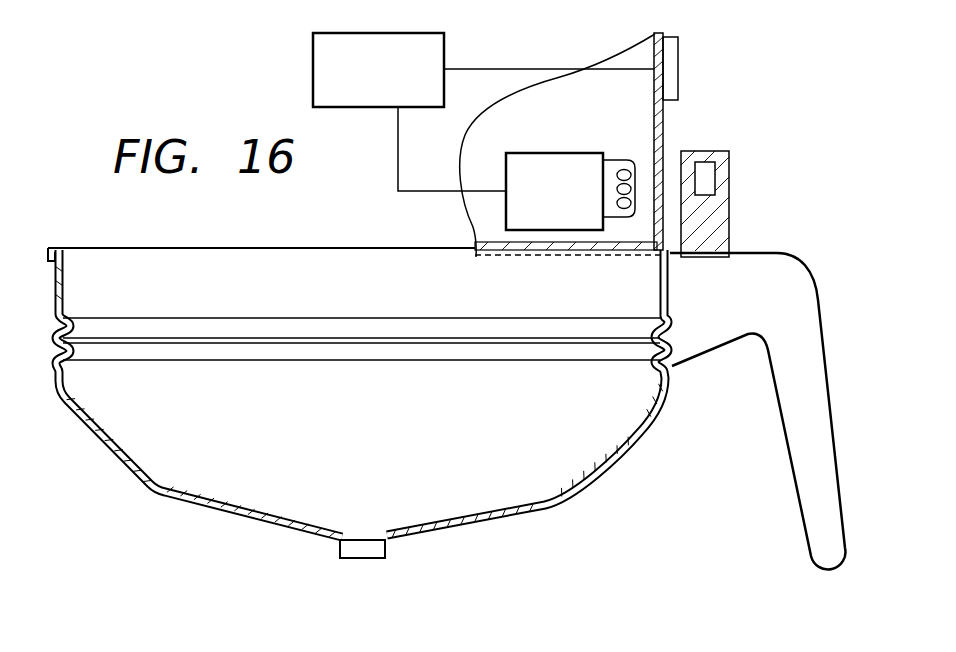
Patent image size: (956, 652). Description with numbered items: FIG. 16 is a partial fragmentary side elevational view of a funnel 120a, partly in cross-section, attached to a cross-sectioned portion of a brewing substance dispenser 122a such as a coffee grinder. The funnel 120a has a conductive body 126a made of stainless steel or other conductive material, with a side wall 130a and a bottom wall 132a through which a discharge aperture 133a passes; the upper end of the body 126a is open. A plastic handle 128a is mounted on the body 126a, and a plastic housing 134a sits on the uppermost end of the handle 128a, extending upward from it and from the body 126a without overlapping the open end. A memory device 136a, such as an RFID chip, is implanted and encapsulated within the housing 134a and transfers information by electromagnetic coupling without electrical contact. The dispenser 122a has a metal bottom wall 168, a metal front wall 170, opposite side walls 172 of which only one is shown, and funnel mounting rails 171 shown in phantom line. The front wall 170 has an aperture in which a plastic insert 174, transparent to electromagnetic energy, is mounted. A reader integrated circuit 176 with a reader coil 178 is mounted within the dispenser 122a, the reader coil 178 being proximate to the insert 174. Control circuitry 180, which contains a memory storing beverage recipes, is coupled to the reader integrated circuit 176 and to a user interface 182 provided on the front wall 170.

The funnel 120a is at (655, 417).
The brewing substance dispenser 122a is at (663, 127).
The conductive body 126a is at (610, 469).
The plastic handle 128a is at (798, 377).
The side wall 130a is at (630, 444).
The bottom wall 132a is at (490, 512).
The discharge aperture 133a is at (367, 558).
The plastic housing 134a is at (729, 202).
The memory device 136a is at (715, 178).
The metal bottom wall 168 is at (498, 243).
The metal front wall 170 is at (653, 52).
The funnel mounting rails 171 is at (570, 258).
The side walls 172 is at (482, 168).
The plastic insert 174 is at (652, 163).
The reader integrated circuit 176 is at (553, 153).
The reader coil 178 is at (611, 219).
The control circuitry 180 is at (313, 67).
The user interface 182 is at (678, 67).